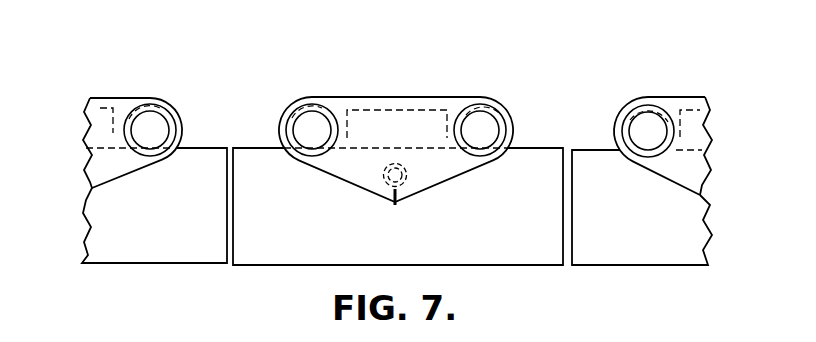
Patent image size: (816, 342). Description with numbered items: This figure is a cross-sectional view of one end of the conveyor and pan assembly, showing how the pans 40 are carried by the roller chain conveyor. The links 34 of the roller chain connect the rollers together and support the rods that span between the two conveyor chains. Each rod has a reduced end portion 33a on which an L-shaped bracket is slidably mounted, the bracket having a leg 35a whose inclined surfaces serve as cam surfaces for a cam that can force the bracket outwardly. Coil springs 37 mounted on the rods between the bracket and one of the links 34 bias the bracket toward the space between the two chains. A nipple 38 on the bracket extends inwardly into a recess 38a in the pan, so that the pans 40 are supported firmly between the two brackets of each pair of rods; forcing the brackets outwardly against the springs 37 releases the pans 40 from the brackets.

The pan 40 is at (193, 253).
The link 34 is at (100, 101).
The coil spring 37 is at (160, 113).
The reduced end portion 33a is at (152, 130).
The leg 35a is at (122, 96).
The nipple 38 is at (408, 177).
The recess 38a is at (392, 208).